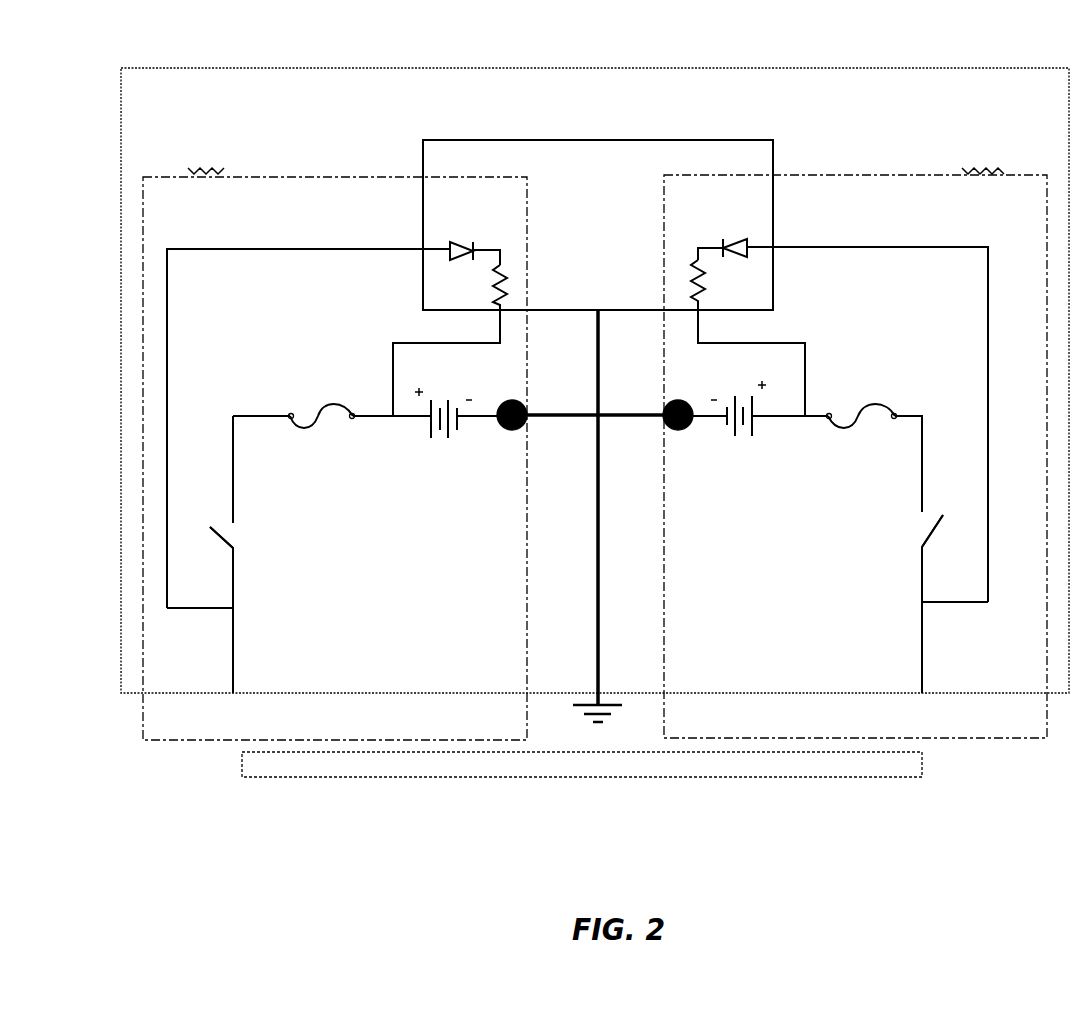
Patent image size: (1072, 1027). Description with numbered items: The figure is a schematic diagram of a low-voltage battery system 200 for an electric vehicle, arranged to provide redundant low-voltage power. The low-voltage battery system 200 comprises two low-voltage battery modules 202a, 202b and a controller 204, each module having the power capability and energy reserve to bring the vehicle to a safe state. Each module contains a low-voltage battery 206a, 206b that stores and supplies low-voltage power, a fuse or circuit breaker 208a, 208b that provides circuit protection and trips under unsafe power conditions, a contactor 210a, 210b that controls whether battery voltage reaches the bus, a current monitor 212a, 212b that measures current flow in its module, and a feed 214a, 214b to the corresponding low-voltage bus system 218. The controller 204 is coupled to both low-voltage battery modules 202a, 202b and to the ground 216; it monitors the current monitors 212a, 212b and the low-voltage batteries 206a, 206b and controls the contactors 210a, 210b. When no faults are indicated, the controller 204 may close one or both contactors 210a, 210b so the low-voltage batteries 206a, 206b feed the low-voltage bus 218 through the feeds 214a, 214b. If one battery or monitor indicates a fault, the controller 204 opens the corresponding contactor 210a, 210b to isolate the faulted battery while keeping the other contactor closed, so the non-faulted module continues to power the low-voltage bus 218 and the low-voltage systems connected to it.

The low-voltage battery system 200 is at (830, 68).
The low-voltage battery module 202a is at (265, 177).
The low-voltage battery module 202b is at (898, 177).
The controller 204 is at (675, 140).
The low-voltage battery 206a is at (443, 429).
The low-voltage battery 206b is at (740, 425).
The fuse 208a is at (322, 432).
The fuse 208b is at (862, 431).
The contactor 210a is at (261, 535).
The contactor 210b is at (889, 530).
The current monitor 212a is at (547, 426).
The current monitor 212b is at (645, 426).
The feed 214a is at (235, 649).
The feed 214b is at (923, 648).
The ground 216 is at (622, 518).
The low-voltage bus system 218 is at (833, 776).